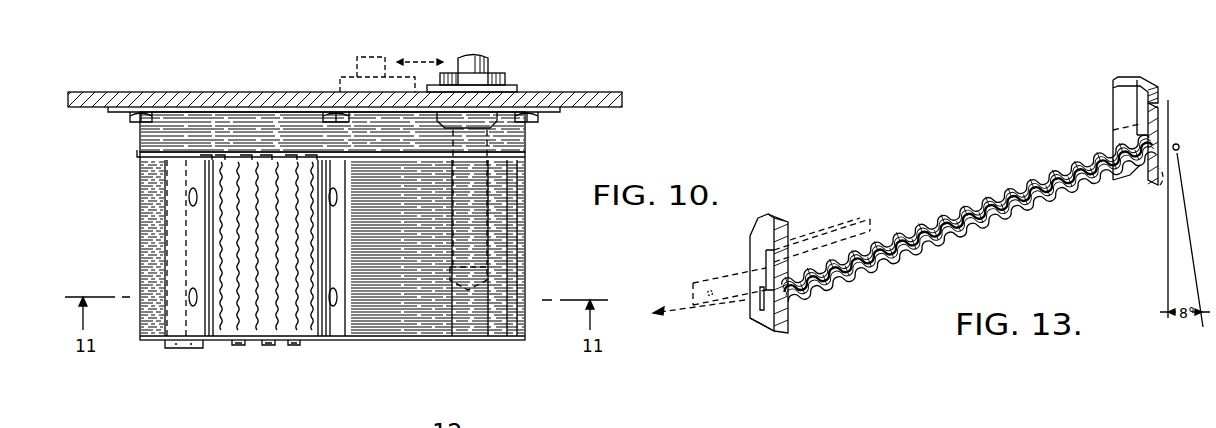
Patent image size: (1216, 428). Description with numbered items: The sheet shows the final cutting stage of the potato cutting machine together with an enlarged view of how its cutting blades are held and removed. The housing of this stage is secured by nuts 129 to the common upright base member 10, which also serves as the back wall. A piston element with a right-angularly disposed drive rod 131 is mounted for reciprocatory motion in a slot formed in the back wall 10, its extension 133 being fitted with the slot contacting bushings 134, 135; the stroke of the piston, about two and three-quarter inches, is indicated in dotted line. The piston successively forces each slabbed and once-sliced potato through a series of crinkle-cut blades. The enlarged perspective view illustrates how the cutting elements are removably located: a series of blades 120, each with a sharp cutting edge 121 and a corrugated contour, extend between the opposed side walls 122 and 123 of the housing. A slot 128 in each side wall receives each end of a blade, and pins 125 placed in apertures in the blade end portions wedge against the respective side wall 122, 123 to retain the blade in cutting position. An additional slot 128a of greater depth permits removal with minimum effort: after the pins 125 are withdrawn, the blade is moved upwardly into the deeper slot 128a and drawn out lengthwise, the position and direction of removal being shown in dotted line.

In FIG. 10, the upright base member 10 is at (570, 92).
In FIG. 10, the blades 120 is at (275, 265).
In FIG. 13, the blades 120 is at (950, 251).
In FIG. 13, the sharp cutting edge 121 is at (946, 222).
In FIG. 10, the side wall 122 is at (345, 160).
In FIG. 13, the side wall 122 is at (1140, 184).
In FIG. 10, the side wall 123 is at (226, 338).
In FIG. 13, the side wall 123 is at (790, 324).
In FIG. 13, the pins 125 is at (776, 312).
In FIG. 13, the slot 128 is at (758, 303).
In FIG. 13, the additional slot 128a is at (788, 252).
In FIG. 10, the nuts 129 is at (137, 121).
In FIG. 10, the drive rod 131 is at (530, 233).
In FIG. 10, the extension 133 is at (489, 73).
In FIG. 10, the slot contacting bushing 134 is at (437, 129).
In FIG. 10, the slot contacting bushing 135 is at (511, 90).